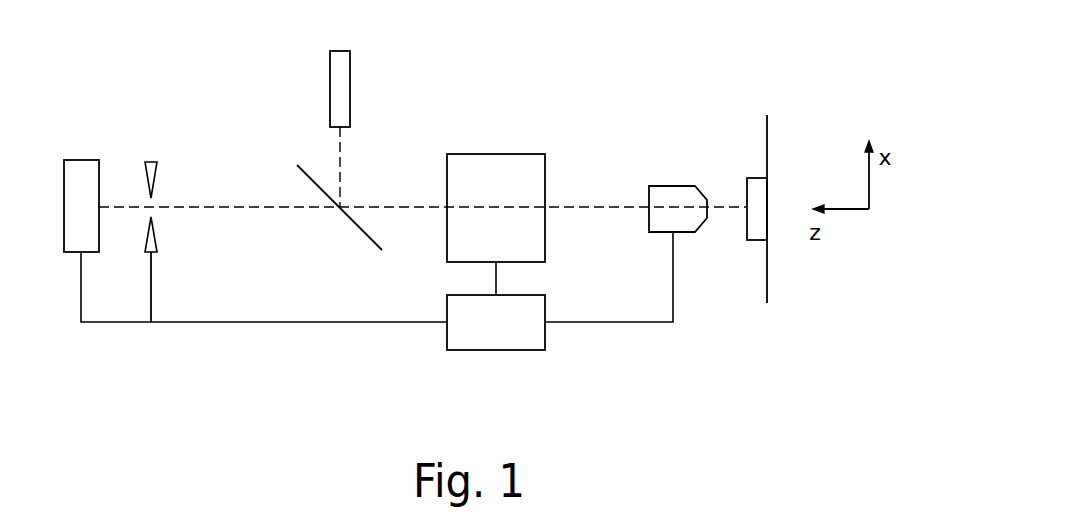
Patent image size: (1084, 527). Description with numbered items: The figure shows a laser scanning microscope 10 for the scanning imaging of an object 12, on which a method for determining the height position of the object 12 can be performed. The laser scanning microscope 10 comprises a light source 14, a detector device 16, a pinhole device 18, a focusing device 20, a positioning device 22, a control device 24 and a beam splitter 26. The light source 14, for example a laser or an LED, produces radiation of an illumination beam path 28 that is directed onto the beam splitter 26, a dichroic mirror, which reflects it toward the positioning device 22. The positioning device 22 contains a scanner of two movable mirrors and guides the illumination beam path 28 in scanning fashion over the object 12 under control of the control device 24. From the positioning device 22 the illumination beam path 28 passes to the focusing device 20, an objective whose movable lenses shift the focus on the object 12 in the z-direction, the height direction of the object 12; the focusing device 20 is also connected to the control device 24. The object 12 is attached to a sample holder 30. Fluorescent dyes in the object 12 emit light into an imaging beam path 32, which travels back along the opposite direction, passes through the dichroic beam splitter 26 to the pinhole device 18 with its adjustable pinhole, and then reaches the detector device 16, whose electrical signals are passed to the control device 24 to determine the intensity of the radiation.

The laser scanning microscope 10 is at (197, 76).
The object 12 is at (752, 178).
The light source 14 is at (350, 87).
The detector device 16 is at (81, 160).
The pinhole device 18 is at (147, 160).
The focusing device 20 is at (673, 186).
The positioning device 22 is at (496, 154).
The control device 24 is at (497, 351).
The beam splitter 26 is at (346, 219).
The illumination beam path 28 is at (341, 157).
The sample holder 30 is at (767, 118).
The imaging beam path 32 is at (218, 208).